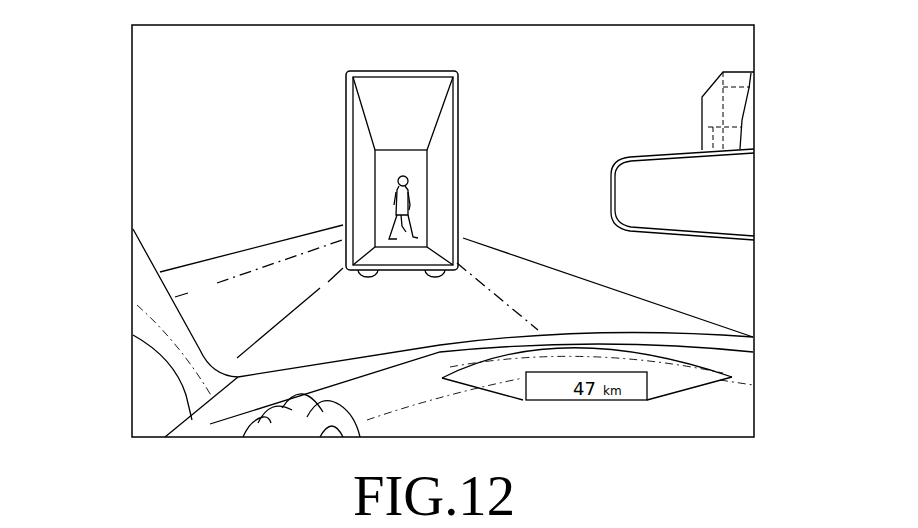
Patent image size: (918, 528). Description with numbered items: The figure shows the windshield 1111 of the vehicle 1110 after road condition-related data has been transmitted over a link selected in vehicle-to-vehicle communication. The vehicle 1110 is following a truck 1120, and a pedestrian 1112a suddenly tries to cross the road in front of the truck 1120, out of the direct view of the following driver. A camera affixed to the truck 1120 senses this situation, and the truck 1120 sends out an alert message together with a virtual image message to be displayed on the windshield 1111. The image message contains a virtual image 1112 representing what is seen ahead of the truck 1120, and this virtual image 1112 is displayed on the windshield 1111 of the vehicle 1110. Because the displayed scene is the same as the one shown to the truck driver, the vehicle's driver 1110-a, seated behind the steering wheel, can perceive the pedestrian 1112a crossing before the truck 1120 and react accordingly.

The vehicle 1110 is at (147, 281).
The vehicle's driver 1110-a is at (253, 410).
The windshield 1111 is at (723, 293).
The virtual image 1112 is at (385, 183).
The pedestrian 1112a is at (397, 205).
The truck 1120 is at (347, 105).